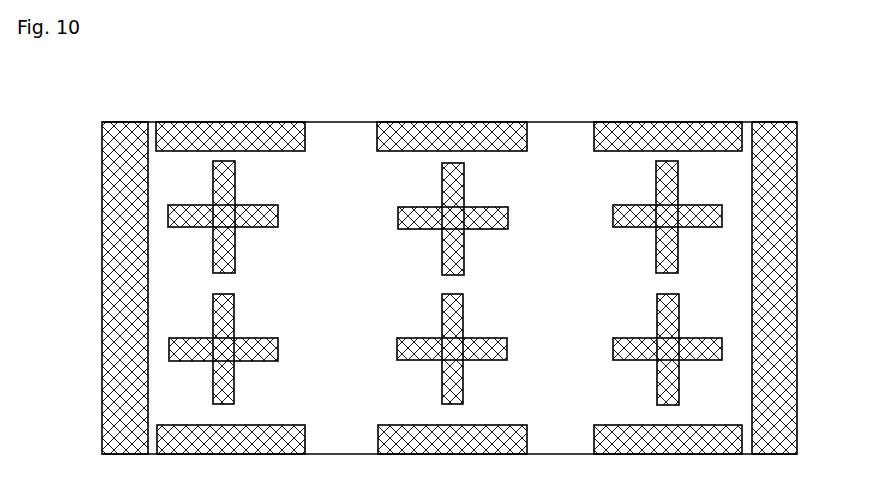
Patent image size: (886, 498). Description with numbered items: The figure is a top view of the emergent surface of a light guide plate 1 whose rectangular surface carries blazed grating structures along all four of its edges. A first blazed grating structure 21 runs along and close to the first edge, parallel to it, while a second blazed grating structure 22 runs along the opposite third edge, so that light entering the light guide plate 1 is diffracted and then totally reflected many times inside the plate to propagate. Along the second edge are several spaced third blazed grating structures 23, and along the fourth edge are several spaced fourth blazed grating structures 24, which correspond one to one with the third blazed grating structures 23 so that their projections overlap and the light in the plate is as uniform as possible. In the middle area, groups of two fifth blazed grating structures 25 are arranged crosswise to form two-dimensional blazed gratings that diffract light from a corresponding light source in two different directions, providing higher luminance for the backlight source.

The light guide plate 1 is at (582, 130).
The first blazed grating structure 21 is at (127, 148).
The second blazed grating structure 22 is at (767, 173).
The third blazed grating structures 23 is at (200, 139).
The fourth blazed grating structures 24 is at (237, 443).
The fifth blazed grating structures 25 is at (213, 217).